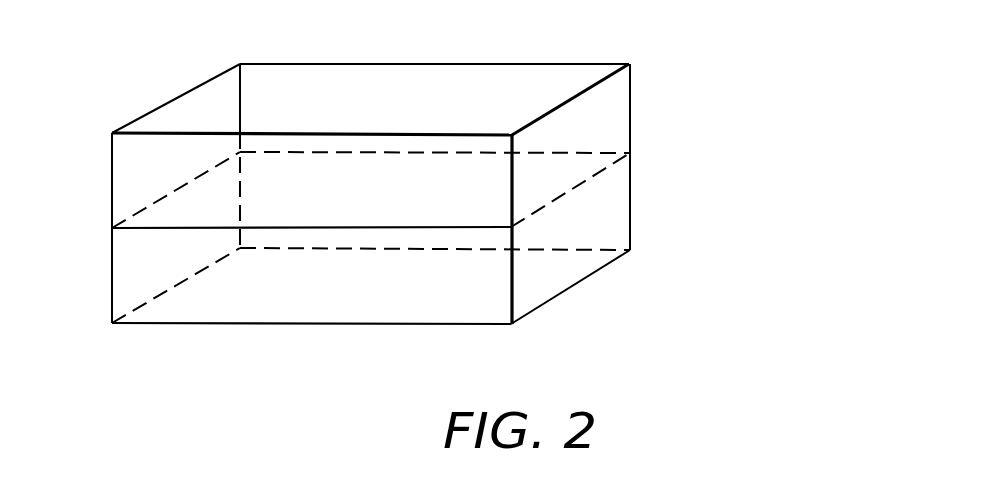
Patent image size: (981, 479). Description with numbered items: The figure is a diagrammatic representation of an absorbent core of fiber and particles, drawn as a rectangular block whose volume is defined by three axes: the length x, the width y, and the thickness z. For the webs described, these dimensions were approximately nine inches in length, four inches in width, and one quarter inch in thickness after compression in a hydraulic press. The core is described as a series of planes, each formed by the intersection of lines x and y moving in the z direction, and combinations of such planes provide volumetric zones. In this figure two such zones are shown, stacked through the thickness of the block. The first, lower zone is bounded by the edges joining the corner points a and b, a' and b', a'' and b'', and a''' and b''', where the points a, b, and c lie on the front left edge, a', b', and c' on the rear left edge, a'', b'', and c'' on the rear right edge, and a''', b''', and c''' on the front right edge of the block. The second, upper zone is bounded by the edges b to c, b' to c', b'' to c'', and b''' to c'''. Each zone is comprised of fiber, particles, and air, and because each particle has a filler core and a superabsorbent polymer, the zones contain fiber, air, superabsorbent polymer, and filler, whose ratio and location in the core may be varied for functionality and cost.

The corner point a is at (295, 322).
The corner point b is at (296, 227).
The corner point c is at (298, 130).
The corner point a' is at (186, 285).
The corner point b' is at (196, 190).
The corner point c' is at (185, 77).
The corner point a'' is at (458, 245).
The corner point b'' is at (459, 145).
The corner point c'' is at (456, 42).
The corner point a''' is at (570, 310).
The corner point b''' is at (547, 190).
The corner point c''' is at (558, 99).
The length axis x is at (315, 372).
The width axis y is at (12, 221).
The thickness axis z is at (721, 174).